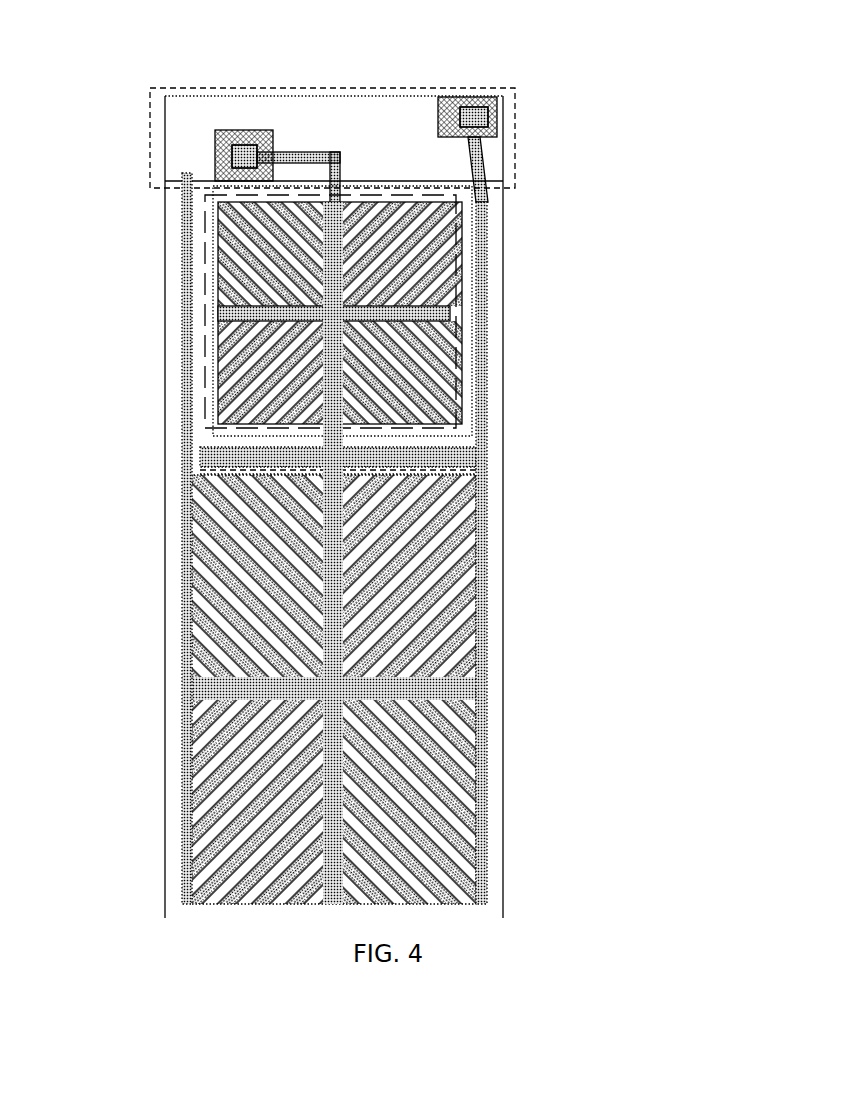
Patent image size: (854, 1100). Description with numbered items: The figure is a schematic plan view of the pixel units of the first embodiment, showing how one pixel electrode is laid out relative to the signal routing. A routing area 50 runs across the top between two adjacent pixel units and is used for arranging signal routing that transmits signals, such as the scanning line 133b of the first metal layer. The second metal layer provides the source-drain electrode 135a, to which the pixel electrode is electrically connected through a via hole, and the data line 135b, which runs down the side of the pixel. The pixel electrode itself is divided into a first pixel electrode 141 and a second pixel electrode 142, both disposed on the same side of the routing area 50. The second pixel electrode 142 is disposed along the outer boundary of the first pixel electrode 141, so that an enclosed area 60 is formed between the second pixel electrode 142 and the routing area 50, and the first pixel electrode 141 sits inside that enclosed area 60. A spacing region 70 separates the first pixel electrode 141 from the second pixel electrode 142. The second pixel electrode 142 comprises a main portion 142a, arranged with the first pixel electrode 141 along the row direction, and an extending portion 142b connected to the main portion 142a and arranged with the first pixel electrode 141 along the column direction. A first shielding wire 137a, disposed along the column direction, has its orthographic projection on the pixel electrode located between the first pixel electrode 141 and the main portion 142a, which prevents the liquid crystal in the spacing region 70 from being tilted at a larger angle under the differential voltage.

The routing area 50 is at (150, 140).
The enclosed area 60 is at (205, 275).
The spacing region 70 is at (213, 340).
The scanning line 133b is at (310, 96).
The source-drain electrode 135a is at (242, 130).
The data line 135b is at (504, 232).
The first shielding wire 137a is at (215, 456).
The first pixel electrode 141 is at (440, 318).
The second pixel electrode 142 is at (468, 538).
The main portion 142a is at (470, 500).
The extending portion 142b is at (485, 420).